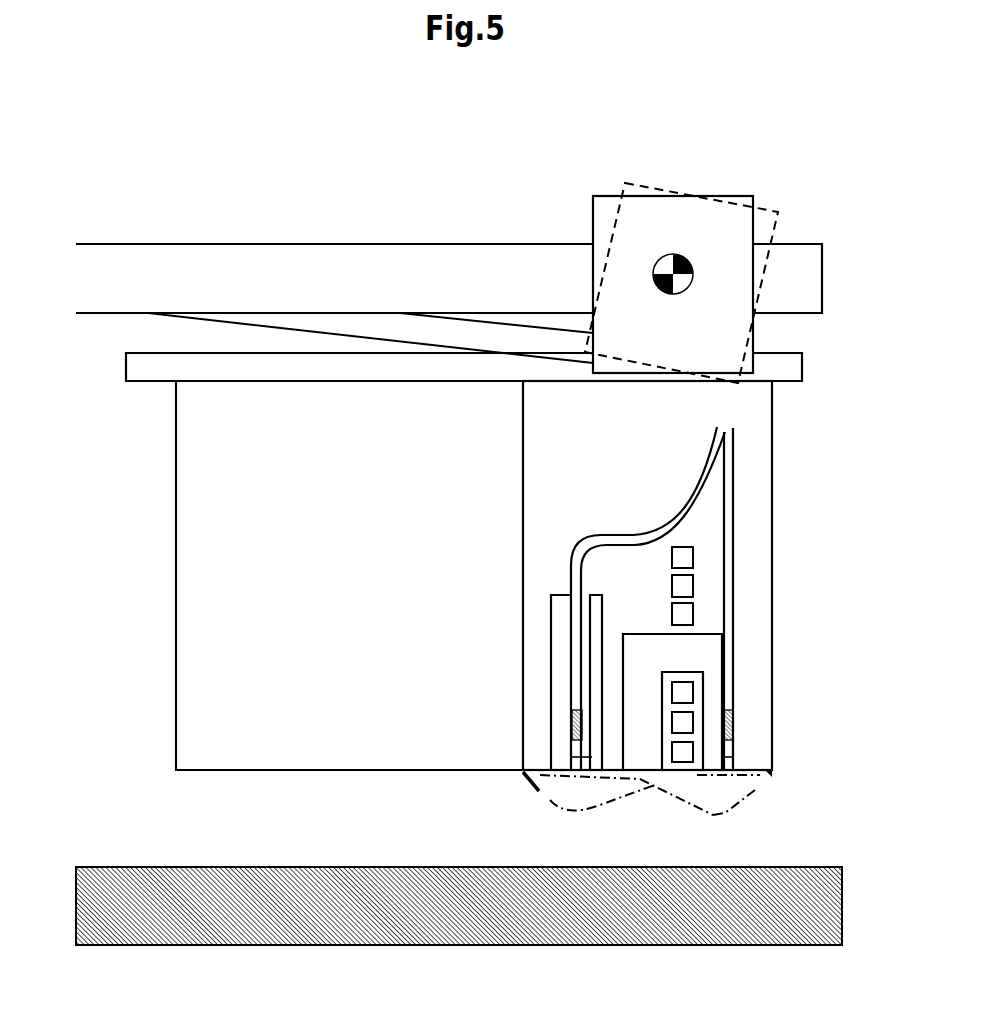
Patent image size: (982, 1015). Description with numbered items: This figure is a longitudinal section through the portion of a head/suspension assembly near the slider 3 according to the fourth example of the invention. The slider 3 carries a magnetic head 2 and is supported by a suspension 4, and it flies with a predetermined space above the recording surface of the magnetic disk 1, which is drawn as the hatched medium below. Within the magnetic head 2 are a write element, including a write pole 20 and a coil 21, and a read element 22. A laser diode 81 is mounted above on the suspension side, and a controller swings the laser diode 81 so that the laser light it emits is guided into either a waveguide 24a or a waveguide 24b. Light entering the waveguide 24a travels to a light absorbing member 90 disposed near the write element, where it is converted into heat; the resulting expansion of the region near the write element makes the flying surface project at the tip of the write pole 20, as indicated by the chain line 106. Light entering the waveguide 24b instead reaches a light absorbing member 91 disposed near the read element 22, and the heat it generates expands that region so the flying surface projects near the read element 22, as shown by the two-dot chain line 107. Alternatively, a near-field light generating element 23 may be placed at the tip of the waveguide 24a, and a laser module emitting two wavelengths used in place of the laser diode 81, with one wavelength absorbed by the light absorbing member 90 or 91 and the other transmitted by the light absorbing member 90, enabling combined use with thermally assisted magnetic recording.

The magnetic disk 1 is at (267, 887).
The magnetic head 2 is at (597, 410).
The slider 3 is at (193, 719).
The suspension 4 is at (200, 262).
The write pole 20 is at (713, 683).
The coil 21 is at (693, 610).
The read element 22 is at (555, 778).
The near-field light generating element 23 is at (740, 778).
The waveguide 24a is at (725, 502).
The waveguide 24b is at (613, 543).
The laser diode 81 is at (658, 218).
The light absorbing member 90 is at (733, 720).
The light absorbing member 91 is at (573, 728).
The chain line 106 is at (738, 800).
The two-dot chain line 107 is at (635, 788).